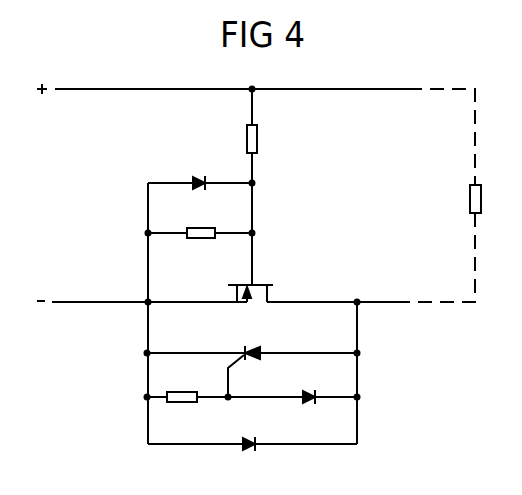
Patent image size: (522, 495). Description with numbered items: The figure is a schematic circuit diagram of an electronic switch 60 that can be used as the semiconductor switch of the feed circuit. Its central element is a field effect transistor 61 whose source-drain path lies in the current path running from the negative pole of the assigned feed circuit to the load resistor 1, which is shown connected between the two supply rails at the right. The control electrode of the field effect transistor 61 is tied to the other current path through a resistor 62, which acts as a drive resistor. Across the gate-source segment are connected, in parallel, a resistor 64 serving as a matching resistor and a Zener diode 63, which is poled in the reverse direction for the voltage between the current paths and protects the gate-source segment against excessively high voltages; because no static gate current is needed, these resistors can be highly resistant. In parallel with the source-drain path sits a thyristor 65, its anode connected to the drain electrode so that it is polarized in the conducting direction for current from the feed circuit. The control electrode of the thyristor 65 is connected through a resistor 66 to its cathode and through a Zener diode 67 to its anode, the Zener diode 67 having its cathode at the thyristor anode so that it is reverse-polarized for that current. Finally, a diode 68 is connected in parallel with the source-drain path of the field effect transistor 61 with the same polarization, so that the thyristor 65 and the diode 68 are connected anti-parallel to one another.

The load resistor 1 is at (481, 201).
The electronic switch 60 is at (385, 205).
The field effect transistor 61 is at (255, 279).
The resistor 62 is at (264, 187).
The Zener diode 63 is at (202, 167).
The resistor 64 is at (200, 251).
The thyristor 65 is at (252, 357).
The resistor 66 is at (186, 381).
The Zener diode 67 is at (294, 380).
The diode 68 is at (252, 464).